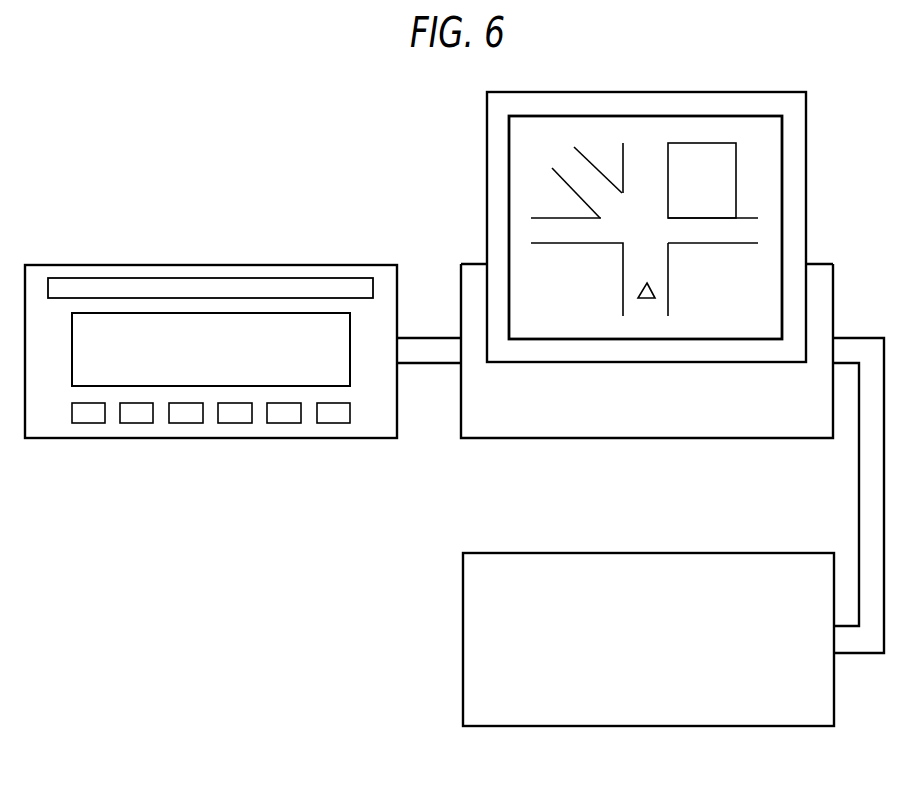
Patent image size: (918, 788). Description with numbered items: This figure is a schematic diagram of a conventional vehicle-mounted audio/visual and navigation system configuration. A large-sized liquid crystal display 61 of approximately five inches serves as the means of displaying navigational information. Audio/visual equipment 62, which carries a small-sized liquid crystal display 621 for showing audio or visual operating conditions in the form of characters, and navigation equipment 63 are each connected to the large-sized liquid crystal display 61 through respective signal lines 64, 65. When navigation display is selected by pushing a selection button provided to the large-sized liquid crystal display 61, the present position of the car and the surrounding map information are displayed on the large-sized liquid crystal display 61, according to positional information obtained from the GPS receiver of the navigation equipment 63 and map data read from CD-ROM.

The large-sized liquid crystal display 61 is at (487, 138).
The audio/visual equipment 62 is at (211, 328).
The small-sized liquid crystal display 621 is at (95, 330).
The navigation equipment 63 is at (649, 553).
The signal line 64 is at (430, 337).
The signal line 65 is at (864, 337).